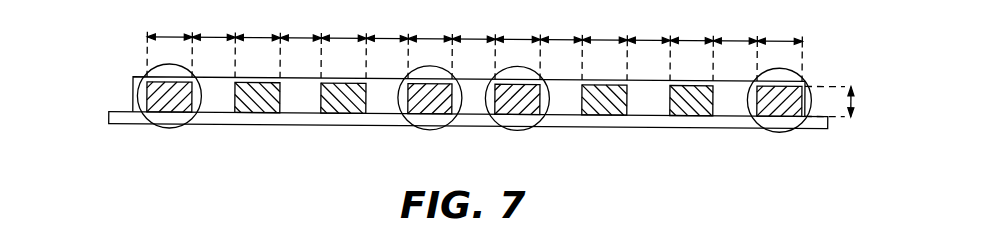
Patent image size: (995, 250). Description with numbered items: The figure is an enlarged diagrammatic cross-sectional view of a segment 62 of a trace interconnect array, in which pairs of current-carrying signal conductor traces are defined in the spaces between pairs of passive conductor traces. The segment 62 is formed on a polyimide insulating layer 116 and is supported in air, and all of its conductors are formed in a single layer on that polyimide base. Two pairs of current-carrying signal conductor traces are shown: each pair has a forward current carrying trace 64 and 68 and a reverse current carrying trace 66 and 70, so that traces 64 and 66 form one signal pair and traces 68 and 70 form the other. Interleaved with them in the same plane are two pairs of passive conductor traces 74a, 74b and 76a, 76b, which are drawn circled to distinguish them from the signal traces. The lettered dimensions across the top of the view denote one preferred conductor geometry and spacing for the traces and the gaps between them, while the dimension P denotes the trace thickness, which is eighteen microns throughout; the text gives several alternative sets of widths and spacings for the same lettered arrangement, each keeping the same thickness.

The segment 62 is at (466, 121).
The polyimide insulating layer 116 is at (123, 110).
The forward current carrying trace 64 is at (248, 113).
The reverse current carrying trace 66 is at (328, 113).
The forward current carrying trace 68 is at (595, 113).
The reverse current carrying trace 70 is at (685, 113).
The passive conductor trace 74a is at (162, 127).
The passive conductor trace 74b is at (424, 128).
The passive conductor trace 76a is at (777, 128).
The passive conductor trace 76b is at (511, 128).